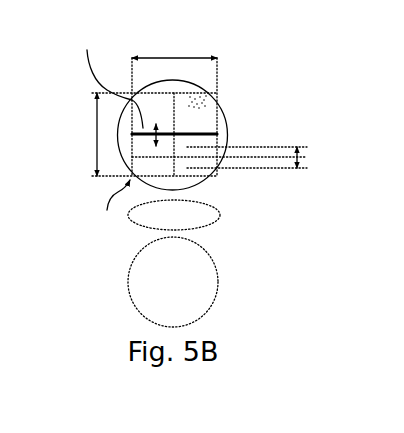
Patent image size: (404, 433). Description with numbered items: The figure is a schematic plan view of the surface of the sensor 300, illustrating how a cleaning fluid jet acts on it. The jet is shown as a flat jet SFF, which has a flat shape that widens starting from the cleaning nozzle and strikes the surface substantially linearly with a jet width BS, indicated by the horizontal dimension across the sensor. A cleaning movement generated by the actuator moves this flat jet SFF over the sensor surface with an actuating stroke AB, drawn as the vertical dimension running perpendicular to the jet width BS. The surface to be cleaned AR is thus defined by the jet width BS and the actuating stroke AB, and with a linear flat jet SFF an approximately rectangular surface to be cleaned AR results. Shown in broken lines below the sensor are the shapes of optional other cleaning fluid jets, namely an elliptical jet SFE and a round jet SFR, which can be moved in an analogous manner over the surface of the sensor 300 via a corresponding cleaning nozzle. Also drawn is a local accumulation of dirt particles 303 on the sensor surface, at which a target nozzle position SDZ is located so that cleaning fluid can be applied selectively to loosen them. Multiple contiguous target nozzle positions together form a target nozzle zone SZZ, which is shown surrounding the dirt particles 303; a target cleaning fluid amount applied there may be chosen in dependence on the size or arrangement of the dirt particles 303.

The sensor 300 is at (220, 130).
The dirt particles 303 is at (200, 156).
The jet width BS is at (173, 57).
The actuating stroke AB is at (96, 144).
The surface to be cleaned AR is at (113, 206).
The target nozzle zone SZZ is at (300, 157).
The target nozzle position SDZ is at (250, 160).
The flat jet SFF is at (96, 79).
The elliptical jet SFE is at (207, 220).
The round jet SFR is at (207, 268).